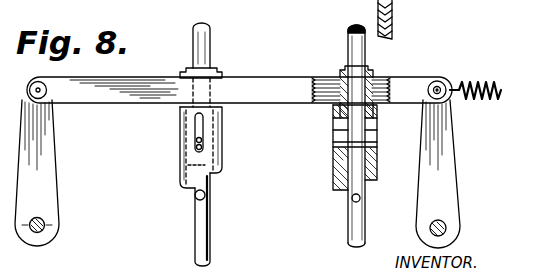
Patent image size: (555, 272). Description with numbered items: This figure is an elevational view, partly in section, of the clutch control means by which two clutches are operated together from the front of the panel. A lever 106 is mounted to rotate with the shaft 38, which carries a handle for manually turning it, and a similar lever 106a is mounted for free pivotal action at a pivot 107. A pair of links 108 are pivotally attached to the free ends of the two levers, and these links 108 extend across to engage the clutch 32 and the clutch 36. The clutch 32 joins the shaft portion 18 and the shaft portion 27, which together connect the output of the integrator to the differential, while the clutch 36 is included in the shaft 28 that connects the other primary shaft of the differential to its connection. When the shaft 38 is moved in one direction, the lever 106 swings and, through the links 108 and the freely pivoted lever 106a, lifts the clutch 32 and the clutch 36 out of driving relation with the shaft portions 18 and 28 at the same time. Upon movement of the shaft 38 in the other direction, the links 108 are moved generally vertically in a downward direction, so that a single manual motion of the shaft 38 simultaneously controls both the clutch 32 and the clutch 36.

The links 108 is at (265, 70).
The lever 106 is at (57, 160).
The shaft 38 is at (45, 218).
The shaft portion 27 is at (209, 42).
The clutch 32 is at (222, 122).
The shaft portion 18 is at (211, 232).
The shaft 28 is at (348, 43).
The clutch 36 is at (336, 161).
The lever 106a is at (458, 157).
The pivot 107 is at (447, 220).